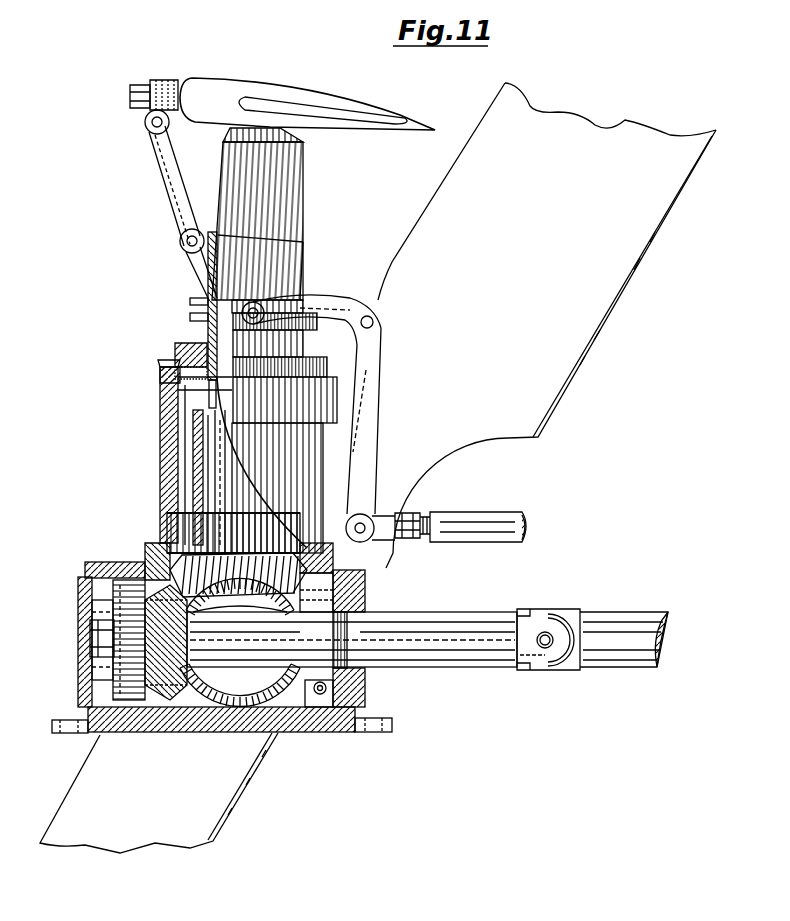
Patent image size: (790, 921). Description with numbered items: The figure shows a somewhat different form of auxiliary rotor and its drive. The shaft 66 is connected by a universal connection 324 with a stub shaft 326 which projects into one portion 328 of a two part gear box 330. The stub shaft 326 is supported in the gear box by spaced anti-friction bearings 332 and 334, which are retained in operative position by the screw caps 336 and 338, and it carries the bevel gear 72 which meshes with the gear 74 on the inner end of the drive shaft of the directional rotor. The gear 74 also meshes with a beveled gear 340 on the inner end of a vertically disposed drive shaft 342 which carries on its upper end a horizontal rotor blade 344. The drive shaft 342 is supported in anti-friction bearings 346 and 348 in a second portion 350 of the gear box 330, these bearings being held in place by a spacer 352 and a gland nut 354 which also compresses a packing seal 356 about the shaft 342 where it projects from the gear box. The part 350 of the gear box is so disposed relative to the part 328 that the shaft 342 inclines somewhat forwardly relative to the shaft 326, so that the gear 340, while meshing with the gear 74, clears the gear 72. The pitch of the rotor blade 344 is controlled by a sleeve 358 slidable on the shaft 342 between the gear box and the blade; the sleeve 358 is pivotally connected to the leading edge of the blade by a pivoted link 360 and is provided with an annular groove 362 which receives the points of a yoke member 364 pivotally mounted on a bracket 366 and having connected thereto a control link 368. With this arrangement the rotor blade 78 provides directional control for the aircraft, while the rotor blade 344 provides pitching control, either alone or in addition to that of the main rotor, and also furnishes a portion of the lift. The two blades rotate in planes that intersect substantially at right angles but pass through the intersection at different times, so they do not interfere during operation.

The shaft 66 is at (642, 612).
The bevel gear 72 is at (143, 565).
The gear 74 is at (287, 707).
The rotor blade 78 is at (572, 348).
The universal connection 324 is at (570, 669).
The stub shaft 326 is at (465, 622).
The portion of gear box 328 is at (253, 733).
The gear box 330 is at (156, 441).
The anti-friction bearing 332 is at (330, 735).
The anti-friction bearing 334 is at (93, 560).
The screw cap 336 is at (90, 629).
The screw cap 338 is at (365, 594).
The beveled gear 340 is at (185, 545).
The drive shaft 342 is at (304, 186).
The rotor blade 344 is at (372, 122).
The anti-friction bearing 346 is at (173, 485).
The anti-friction bearing 348 is at (175, 383).
The second portion of gear box 350 is at (177, 350).
The spacer 352 is at (170, 413).
The gland nut 354 is at (193, 363).
The packing seal 356 is at (193, 337).
The sleeve 358 is at (305, 257).
The pivoted link 360 is at (162, 166).
The annular groove 362 is at (193, 302).
The yoke member 364 is at (362, 440).
The bracket 366 is at (385, 357).
The control link 368 is at (502, 515).